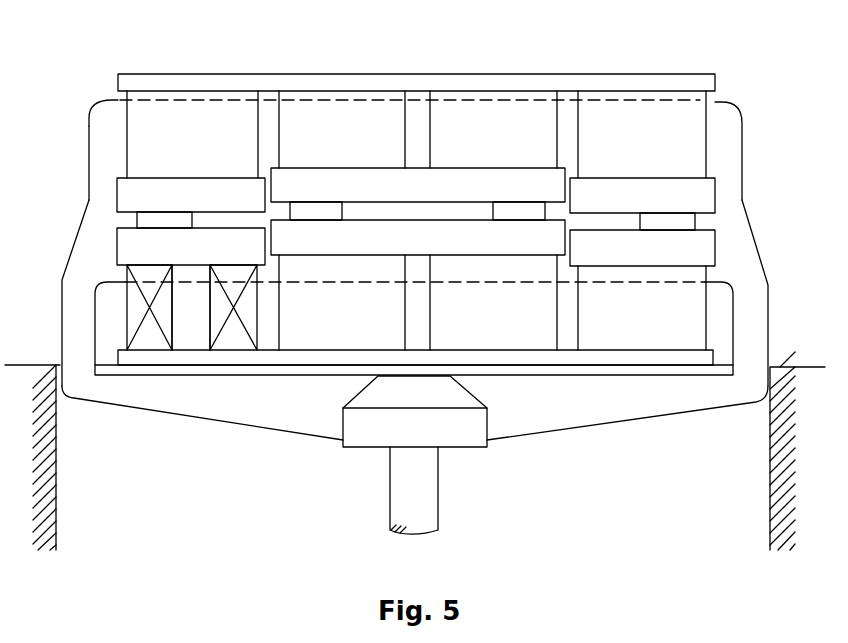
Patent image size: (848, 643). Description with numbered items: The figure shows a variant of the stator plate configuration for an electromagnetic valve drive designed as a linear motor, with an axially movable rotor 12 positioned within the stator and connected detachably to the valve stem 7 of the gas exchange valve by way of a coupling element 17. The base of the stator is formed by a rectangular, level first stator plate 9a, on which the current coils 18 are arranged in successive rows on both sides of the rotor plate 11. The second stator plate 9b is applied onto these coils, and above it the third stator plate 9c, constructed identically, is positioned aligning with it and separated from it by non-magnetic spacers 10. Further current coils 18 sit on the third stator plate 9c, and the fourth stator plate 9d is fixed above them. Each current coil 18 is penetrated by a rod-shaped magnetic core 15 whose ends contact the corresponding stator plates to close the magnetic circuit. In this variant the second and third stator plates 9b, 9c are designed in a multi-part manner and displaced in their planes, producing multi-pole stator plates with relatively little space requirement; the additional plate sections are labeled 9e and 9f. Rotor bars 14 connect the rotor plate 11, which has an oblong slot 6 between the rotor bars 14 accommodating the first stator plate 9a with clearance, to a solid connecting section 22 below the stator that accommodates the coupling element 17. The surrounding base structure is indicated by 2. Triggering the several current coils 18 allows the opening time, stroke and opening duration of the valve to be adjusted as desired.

The base wall 2 is at (814, 431).
The oblong slot 6 is at (723, 323).
The valve stem 7 is at (425, 505).
The first stator plate 9a is at (692, 360).
The second stator plate 9b is at (693, 243).
The third stator plate 9c is at (693, 198).
The fourth stator plate 9d is at (693, 80).
The plate 9e is at (367, 183).
The plate 9f is at (443, 228).
The non-magnetic spacers 10 is at (165, 222).
The rotor plate 11 is at (85, 210).
The rotor 12 is at (97, 100).
The rotor bar 14 is at (75, 322).
The rod-shaped magnetic core 15 is at (192, 345).
The coupling element 17 is at (377, 433).
The current coils 18 is at (307, 107).
The connecting section 22 is at (237, 407).